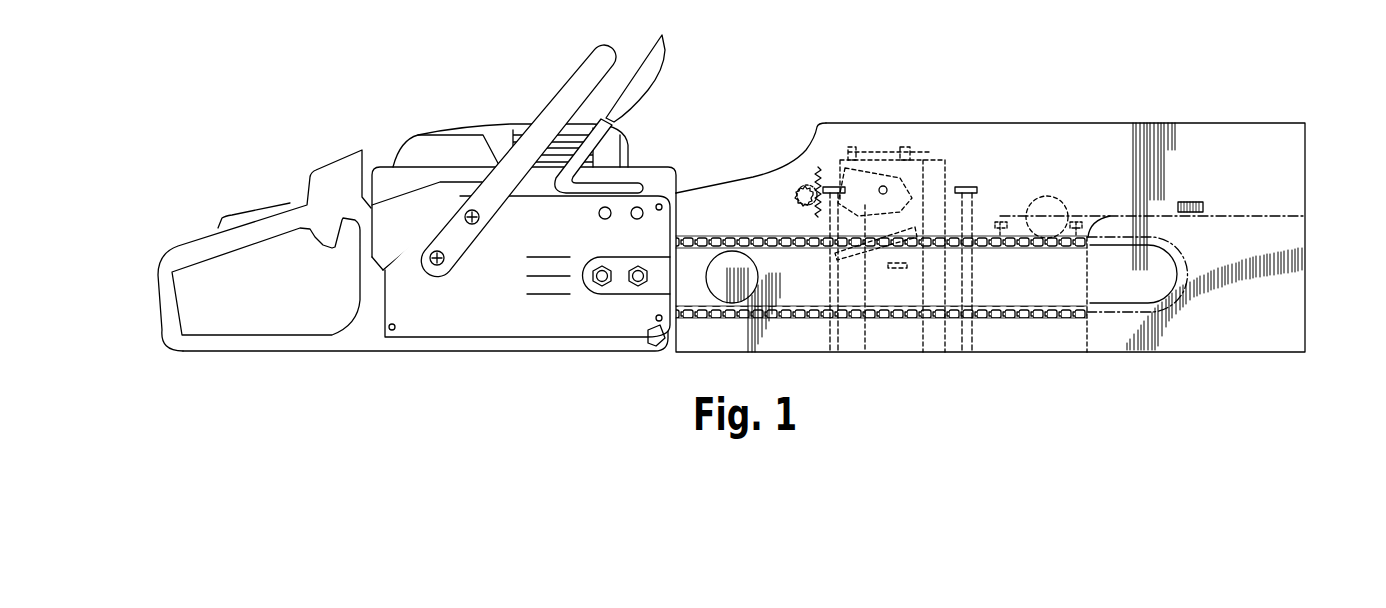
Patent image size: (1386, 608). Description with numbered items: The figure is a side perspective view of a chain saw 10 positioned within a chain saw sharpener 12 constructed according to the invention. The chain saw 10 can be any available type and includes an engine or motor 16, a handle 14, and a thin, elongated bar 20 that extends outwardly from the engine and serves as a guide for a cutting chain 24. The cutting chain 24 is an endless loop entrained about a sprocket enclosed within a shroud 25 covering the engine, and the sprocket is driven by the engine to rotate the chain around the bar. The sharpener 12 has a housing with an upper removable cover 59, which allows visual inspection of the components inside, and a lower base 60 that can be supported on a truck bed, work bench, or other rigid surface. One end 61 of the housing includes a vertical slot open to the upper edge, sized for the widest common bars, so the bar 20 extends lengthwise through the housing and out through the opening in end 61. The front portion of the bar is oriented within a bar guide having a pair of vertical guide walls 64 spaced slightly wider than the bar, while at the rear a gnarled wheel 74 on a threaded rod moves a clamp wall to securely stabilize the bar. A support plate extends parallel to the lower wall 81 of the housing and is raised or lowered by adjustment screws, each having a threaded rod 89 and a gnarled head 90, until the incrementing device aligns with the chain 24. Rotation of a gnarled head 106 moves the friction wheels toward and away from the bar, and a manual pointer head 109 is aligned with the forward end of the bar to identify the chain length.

The chain saw 10 is at (238, 115).
The chain saw sharpener 12 is at (1052, 52).
The handle 14 is at (565, 98).
The engine or motor 16 is at (538, 352).
The bar 20 is at (1015, 288).
The cutting chain 24 is at (863, 314).
The shroud 25 is at (432, 318).
The upper removable cover 59 is at (1230, 122).
The lower base 60 is at (937, 352).
The end of the housing 61 is at (677, 193).
The vertical guide walls 64 is at (1225, 258).
The gnarled wheel 74 is at (732, 263).
The lower wall of the housing 81 is at (1255, 352).
The threaded rod 89 is at (967, 280).
The gnarled head 90 is at (833, 187).
The gnarled head 106 is at (1048, 207).
The pointer head 109 is at (1190, 202).